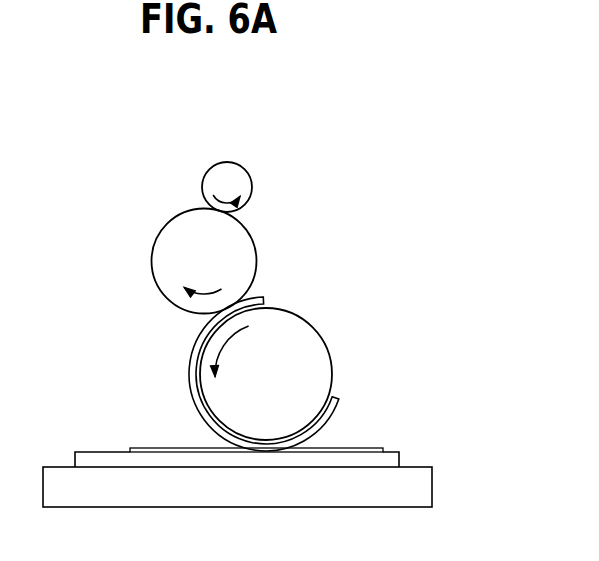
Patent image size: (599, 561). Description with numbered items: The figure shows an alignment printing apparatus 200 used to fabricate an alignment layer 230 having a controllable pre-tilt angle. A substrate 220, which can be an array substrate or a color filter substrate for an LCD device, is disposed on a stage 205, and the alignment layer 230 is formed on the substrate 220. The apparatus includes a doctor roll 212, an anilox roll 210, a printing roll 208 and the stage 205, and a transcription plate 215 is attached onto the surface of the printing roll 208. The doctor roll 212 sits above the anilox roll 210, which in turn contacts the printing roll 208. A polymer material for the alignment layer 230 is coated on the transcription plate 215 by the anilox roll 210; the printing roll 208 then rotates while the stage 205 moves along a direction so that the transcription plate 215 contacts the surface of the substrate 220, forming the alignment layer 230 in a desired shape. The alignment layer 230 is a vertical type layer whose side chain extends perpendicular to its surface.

The alignment printing apparatus 200 is at (292, 165).
The stage 205 is at (425, 488).
The printing roll 208 is at (318, 332).
The anilox roll 210 is at (152, 259).
The doctor roll 212 is at (205, 175).
The transcription plate 215 is at (192, 392).
The substrate 220 is at (88, 451).
The alignment layer 230 is at (355, 448).